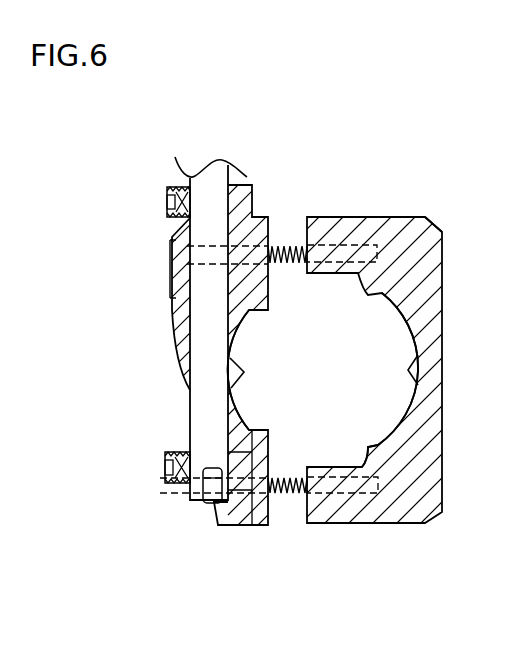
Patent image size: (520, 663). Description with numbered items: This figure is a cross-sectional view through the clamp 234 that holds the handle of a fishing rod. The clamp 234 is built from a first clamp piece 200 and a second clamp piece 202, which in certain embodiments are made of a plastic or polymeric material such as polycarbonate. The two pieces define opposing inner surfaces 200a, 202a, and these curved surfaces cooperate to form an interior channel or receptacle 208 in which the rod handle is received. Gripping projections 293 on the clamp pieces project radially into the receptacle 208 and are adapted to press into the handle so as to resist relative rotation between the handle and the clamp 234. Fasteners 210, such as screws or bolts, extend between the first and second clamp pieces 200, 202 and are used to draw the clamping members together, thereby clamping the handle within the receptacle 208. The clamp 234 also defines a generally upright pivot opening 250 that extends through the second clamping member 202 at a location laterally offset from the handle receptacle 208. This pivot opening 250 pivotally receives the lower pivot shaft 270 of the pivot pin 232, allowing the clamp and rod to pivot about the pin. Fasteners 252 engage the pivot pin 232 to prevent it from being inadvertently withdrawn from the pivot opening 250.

The first clamp piece 200 is at (442, 265).
The inner surface of first clamp piece 200a is at (402, 316).
The second clamp piece 202 is at (172, 293).
The inner surface of second clamp piece 202a is at (240, 328).
The receptacle 208 is at (413, 405).
The fasteners 210 is at (286, 243).
The pivot pin 232 is at (190, 178).
The clamp 234 is at (441, 217).
The pivot opening 250 is at (188, 346).
The fasteners 252 is at (167, 195).
The lower pivot shaft 270 is at (190, 426).
The gripping projections 293 is at (365, 443).